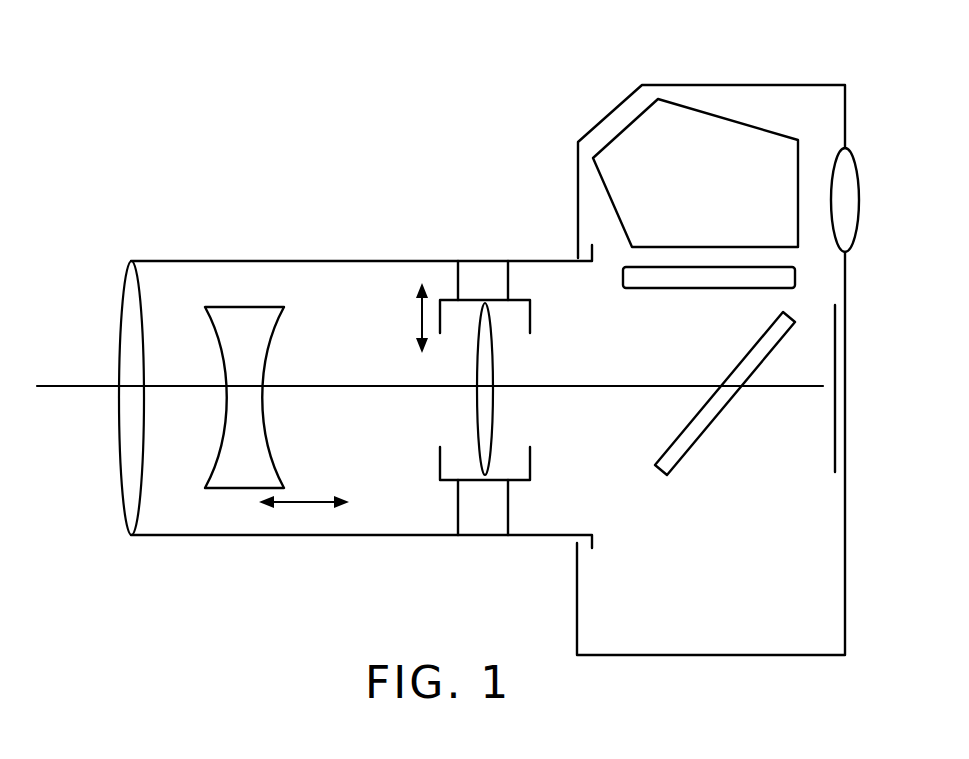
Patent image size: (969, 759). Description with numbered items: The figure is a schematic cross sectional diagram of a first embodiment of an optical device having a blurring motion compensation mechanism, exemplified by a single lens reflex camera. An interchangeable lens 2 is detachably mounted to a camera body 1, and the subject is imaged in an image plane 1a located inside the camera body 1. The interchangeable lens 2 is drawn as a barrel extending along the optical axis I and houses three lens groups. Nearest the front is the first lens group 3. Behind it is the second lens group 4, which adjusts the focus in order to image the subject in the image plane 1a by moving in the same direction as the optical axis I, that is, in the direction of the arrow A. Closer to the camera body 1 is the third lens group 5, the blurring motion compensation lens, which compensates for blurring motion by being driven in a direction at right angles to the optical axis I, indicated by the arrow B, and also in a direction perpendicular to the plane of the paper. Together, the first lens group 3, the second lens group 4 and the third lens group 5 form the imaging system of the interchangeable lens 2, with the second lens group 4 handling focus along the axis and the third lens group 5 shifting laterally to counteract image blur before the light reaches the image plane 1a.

The camera body 1 is at (768, 633).
The image plane 1a is at (837, 480).
The interchangeable lens 2 is at (272, 280).
The first lens group 3 is at (124, 522).
The second lens group 4 is at (240, 483).
The third lens group 5 is at (456, 465).
The arrow A is at (304, 490).
The arrow B is at (409, 318).
The optical axis I is at (418, 386).